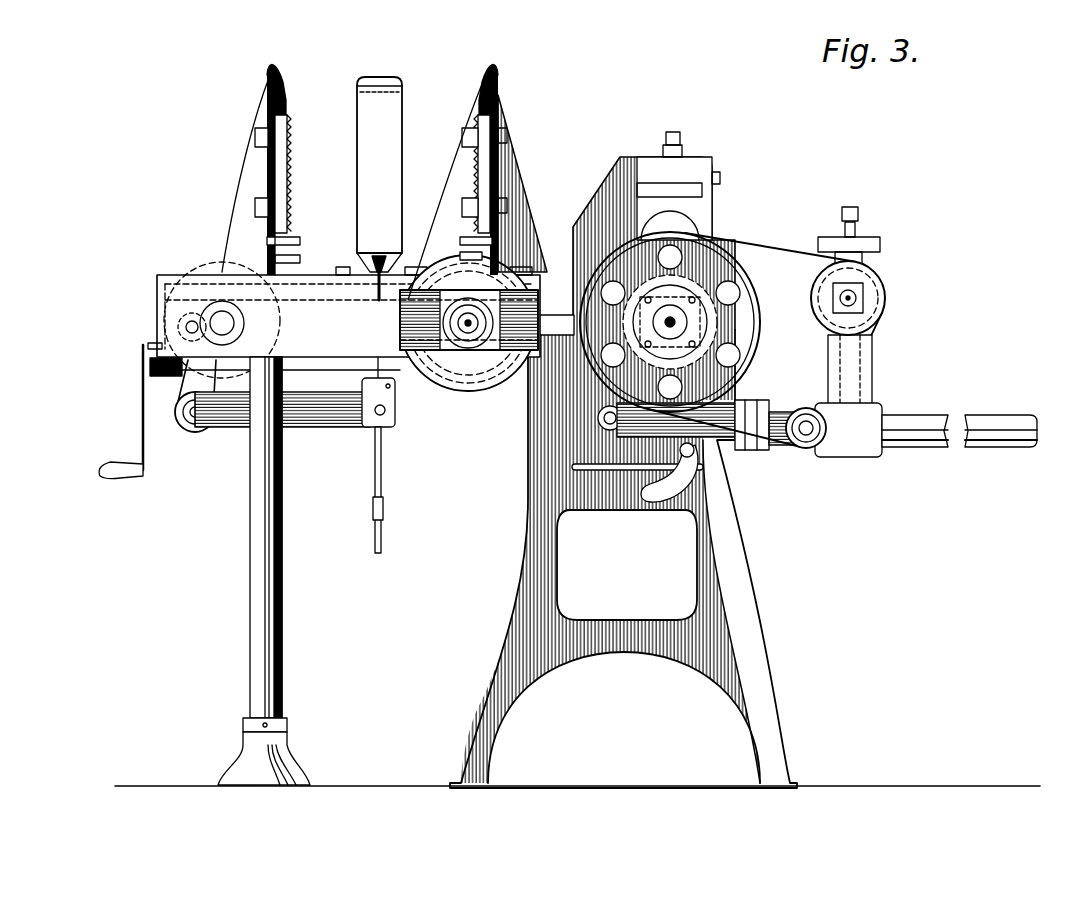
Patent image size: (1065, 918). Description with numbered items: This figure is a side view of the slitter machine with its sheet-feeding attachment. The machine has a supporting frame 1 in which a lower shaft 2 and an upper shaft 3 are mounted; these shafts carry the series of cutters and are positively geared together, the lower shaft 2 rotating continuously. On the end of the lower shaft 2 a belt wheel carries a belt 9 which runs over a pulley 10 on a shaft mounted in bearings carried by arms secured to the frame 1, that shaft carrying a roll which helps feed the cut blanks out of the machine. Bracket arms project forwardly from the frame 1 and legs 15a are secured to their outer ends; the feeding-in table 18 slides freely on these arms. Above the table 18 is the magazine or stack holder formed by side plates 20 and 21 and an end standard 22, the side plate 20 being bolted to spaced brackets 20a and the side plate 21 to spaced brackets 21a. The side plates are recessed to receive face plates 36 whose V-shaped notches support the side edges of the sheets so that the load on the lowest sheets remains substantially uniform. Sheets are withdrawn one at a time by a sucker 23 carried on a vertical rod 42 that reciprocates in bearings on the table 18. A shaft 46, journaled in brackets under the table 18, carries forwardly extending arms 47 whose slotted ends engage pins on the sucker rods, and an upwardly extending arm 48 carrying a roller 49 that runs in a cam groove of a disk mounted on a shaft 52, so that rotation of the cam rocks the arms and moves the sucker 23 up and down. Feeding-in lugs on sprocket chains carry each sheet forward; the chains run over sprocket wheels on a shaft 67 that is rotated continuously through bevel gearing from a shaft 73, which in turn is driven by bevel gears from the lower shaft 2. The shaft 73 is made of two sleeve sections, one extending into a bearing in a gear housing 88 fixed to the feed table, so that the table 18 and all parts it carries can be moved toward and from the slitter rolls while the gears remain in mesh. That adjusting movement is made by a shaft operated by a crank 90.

The supporting frame 1 is at (722, 568).
The lower shaft 2 is at (674, 323).
The upper shaft 3 is at (676, 220).
The belt 9 is at (758, 252).
The pulley 10 is at (876, 293).
The legs 15a is at (282, 618).
The table 18 is at (322, 270).
The side plate 20 is at (275, 100).
The spaced brackets 20a is at (236, 233).
The side plate 21 is at (496, 88).
The spaced brackets 21a is at (510, 222).
The end standard 22 is at (385, 68).
The sucker 23 is at (388, 256).
The face plates 36 is at (292, 168).
The vertical rods 42 is at (370, 362).
The shaft 46 is at (195, 433).
The arms 47 is at (345, 430).
The upwardly extending arm 48 is at (180, 385).
The roller 49 is at (160, 340).
The shaft 52 is at (180, 315).
The shaft 67 is at (469, 354).
The shaft 73 is at (560, 330).
The gear housing 88 is at (446, 378).
The crank 90 is at (142, 440).